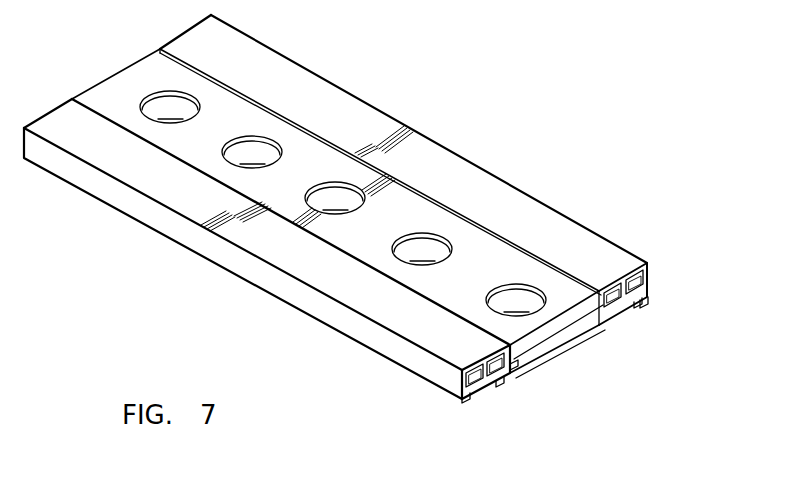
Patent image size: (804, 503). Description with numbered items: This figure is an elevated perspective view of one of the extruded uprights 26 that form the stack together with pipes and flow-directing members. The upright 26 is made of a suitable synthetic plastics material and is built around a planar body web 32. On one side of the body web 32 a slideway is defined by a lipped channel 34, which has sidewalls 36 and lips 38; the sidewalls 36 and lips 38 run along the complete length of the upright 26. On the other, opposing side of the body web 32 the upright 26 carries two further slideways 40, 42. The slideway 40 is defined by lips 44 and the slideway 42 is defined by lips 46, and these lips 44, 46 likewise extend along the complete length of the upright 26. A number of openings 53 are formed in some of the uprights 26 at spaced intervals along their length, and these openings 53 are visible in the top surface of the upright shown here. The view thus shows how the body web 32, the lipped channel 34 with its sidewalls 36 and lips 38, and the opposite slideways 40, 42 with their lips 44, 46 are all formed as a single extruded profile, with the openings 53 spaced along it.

The upright 26 is at (403, 125).
The planar body web 32 is at (549, 223).
The lipped channel 34 is at (565, 305).
The sidewalls 36 is at (482, 373).
The lips 38 is at (240, 92).
The slideway 40 is at (570, 344).
The slideway 42 is at (480, 392).
The lips 44 is at (515, 370).
The lips 46 is at (465, 399).
The openings 53 is at (343, 203).